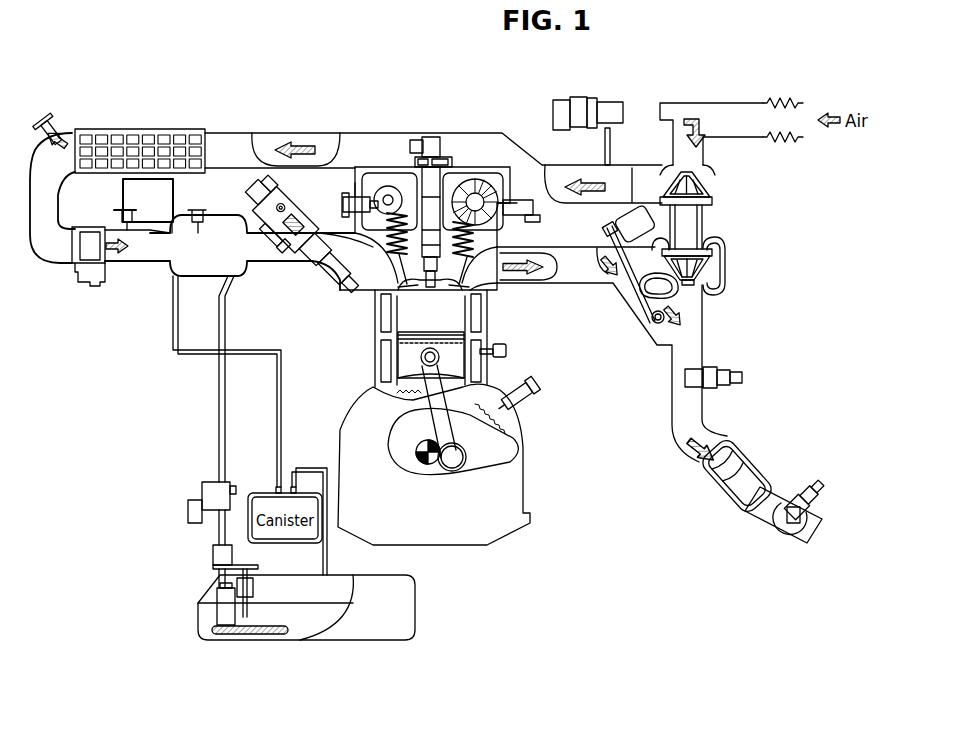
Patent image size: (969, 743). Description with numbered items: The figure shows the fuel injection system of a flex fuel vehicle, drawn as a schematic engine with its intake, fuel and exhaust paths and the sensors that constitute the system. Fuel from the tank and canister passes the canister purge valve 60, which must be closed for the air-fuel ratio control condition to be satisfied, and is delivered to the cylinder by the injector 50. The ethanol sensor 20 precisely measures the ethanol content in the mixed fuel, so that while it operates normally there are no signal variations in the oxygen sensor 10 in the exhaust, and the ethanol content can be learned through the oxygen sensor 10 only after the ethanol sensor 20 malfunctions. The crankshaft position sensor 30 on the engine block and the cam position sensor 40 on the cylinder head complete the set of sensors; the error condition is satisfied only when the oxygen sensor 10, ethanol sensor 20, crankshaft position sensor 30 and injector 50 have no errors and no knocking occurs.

The oxygen sensor 10 is at (811, 478).
The ethanol sensor 20 is at (202, 498).
The crankshaft position sensor 30 is at (530, 400).
The cam position sensor 40 is at (355, 193).
The injector 50 is at (348, 266).
The canister purge valve 60 is at (115, 210).